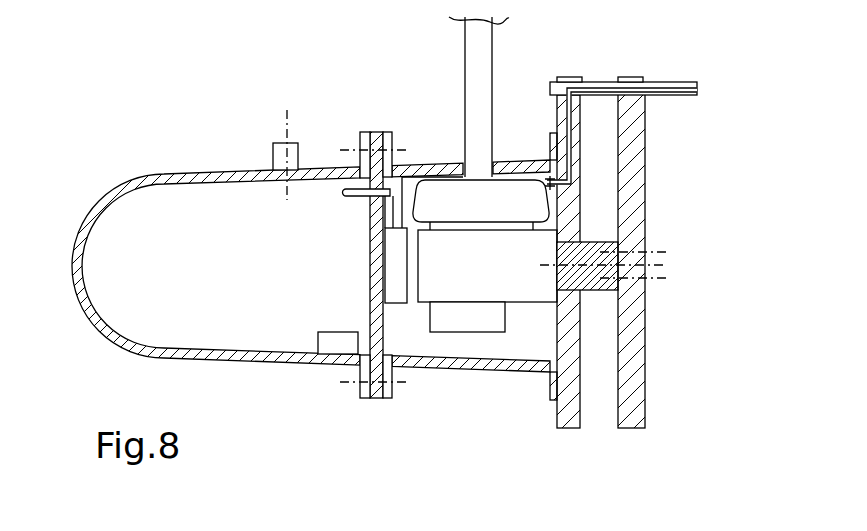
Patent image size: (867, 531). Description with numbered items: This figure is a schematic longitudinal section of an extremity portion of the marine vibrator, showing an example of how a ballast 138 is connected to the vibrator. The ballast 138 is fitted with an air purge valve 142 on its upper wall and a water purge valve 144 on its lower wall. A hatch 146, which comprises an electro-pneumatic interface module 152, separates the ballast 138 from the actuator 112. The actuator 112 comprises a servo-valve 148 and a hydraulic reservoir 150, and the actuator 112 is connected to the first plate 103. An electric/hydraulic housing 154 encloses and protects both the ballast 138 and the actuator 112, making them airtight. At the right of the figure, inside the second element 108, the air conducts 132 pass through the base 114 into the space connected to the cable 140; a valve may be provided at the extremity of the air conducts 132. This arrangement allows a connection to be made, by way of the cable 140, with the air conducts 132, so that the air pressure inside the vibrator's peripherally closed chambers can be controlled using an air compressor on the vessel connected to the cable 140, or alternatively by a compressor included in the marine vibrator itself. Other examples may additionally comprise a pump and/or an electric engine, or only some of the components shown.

The first plate 103 is at (632, 414).
The second element 108 is at (697, 96).
The actuator 112 is at (461, 287).
The base 114 is at (569, 428).
The air conducts 132 is at (605, 77).
The ballast 138 is at (203, 162).
The cable 140 is at (463, 53).
The air purge valve 142 is at (281, 147).
The water purge valve 144 is at (333, 345).
The hatch 146 is at (377, 392).
The servo-valve 148 is at (491, 320).
The hydraulic reservoir 150 is at (521, 192).
The electro-pneumatic interface module 152 is at (392, 260).
The electric/hydraulic housing 154 is at (466, 364).